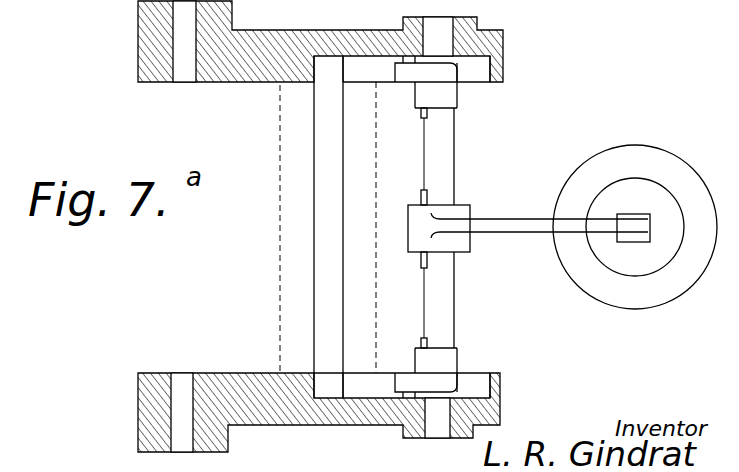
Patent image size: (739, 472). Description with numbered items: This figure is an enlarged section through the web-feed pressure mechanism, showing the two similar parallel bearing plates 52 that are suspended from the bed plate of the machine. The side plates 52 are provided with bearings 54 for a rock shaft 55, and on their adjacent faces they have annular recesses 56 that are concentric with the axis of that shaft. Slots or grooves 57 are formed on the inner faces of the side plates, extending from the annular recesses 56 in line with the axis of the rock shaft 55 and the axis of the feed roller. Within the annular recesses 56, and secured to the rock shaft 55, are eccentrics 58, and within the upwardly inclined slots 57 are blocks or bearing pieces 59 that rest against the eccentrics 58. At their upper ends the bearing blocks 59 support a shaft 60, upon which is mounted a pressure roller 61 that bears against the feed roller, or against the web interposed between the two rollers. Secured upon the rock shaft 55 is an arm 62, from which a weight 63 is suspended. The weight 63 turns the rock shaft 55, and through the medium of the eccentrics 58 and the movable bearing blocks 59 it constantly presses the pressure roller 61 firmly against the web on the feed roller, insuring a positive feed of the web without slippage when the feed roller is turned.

The bearing plate 52 is at (240, 79).
The bearing 54 is at (455, 22).
The rock shaft 55 is at (442, 173).
The annular recess 56 is at (484, 70).
The slot 57 is at (315, 30).
The eccentric 58 is at (410, 72).
The bearing block 59 is at (370, 72).
The shaft 60 is at (314, 231).
The pressure roller 61 is at (280, 185).
The arm 62 is at (512, 227).
The weight 63 is at (628, 302).